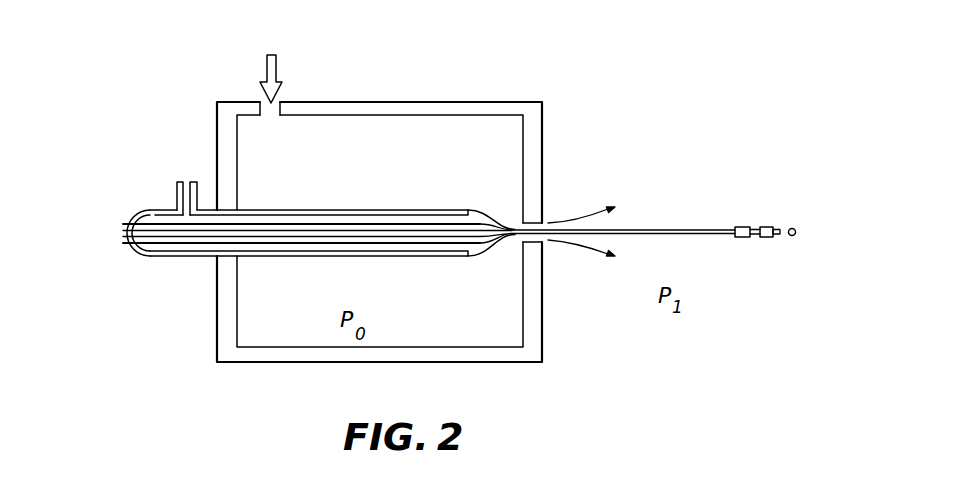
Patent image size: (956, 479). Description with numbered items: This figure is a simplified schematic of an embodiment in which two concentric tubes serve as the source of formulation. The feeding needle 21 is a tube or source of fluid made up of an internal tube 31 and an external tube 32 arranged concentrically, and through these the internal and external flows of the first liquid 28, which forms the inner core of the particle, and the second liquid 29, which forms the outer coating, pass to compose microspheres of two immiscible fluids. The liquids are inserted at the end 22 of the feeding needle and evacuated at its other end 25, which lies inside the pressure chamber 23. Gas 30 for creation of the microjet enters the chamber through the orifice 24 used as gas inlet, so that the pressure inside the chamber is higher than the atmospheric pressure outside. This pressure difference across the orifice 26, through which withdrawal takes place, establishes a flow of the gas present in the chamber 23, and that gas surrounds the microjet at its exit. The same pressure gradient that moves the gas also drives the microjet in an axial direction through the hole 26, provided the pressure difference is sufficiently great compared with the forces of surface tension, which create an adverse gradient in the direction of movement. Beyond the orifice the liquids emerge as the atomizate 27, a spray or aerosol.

The feeding needle 21 is at (320, 209).
The end of the feeding needle 22 is at (177, 103).
The pressure chamber 23 is at (442, 331).
The orifice 24 is at (283, 98).
The end of the feeding needle 25 is at (508, 222).
The orifice 26 is at (553, 223).
The atomizate 27 is at (801, 219).
The first liquid to be atomized 28 is at (110, 233).
The second liquid to be atomized 29 is at (187, 177).
The gas for creation of microjet 30 is at (265, 63).
The internal tube of feeding needle 31 is at (157, 258).
The external tube of feeding needle 32 is at (197, 257).